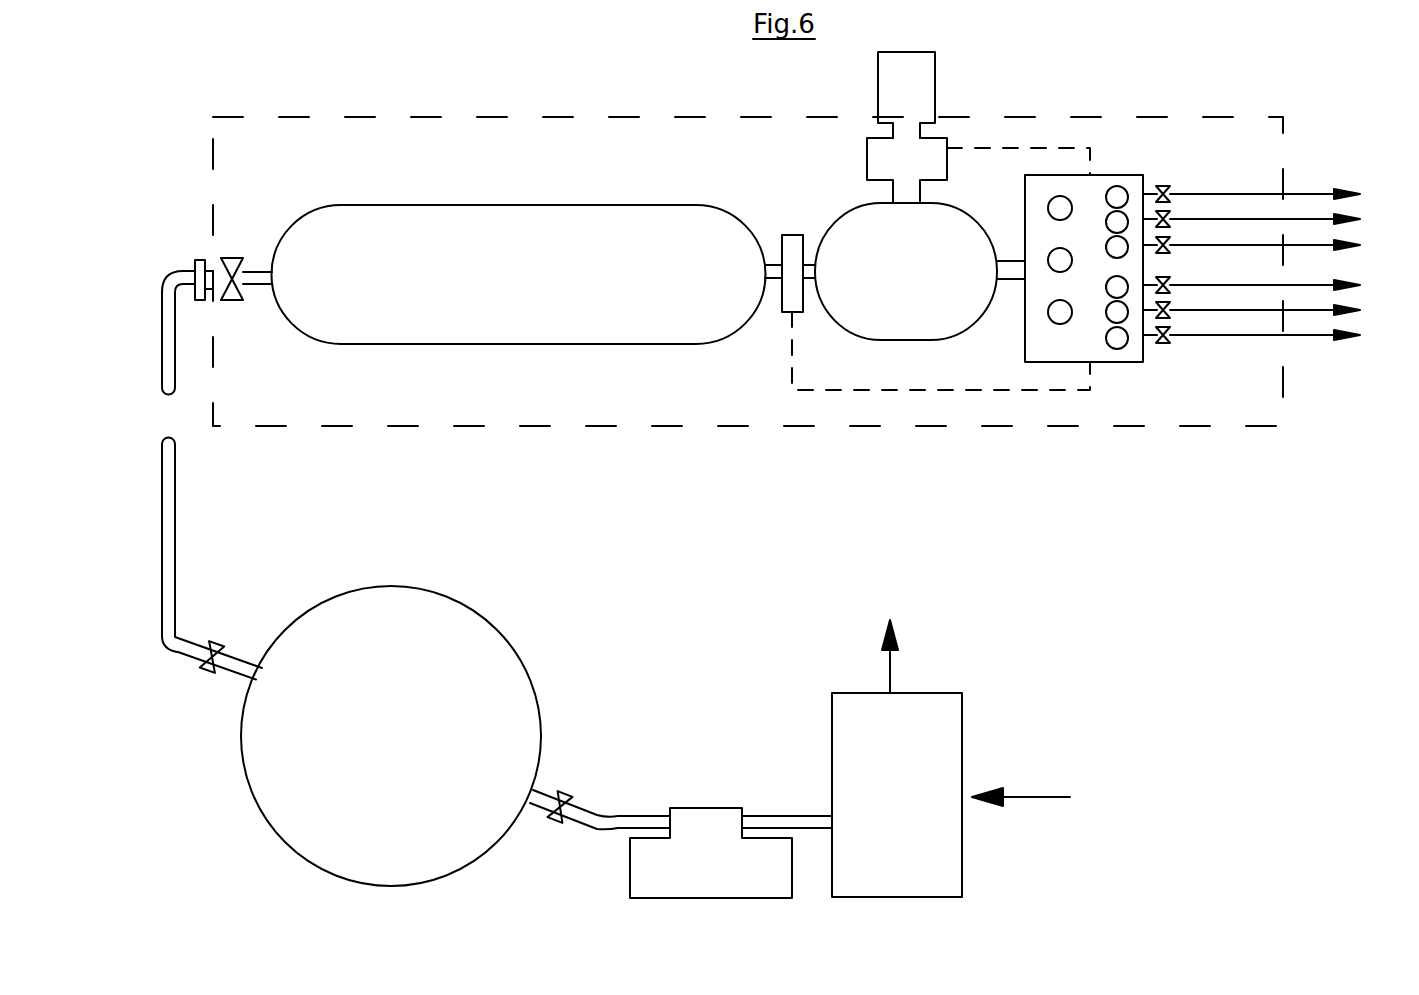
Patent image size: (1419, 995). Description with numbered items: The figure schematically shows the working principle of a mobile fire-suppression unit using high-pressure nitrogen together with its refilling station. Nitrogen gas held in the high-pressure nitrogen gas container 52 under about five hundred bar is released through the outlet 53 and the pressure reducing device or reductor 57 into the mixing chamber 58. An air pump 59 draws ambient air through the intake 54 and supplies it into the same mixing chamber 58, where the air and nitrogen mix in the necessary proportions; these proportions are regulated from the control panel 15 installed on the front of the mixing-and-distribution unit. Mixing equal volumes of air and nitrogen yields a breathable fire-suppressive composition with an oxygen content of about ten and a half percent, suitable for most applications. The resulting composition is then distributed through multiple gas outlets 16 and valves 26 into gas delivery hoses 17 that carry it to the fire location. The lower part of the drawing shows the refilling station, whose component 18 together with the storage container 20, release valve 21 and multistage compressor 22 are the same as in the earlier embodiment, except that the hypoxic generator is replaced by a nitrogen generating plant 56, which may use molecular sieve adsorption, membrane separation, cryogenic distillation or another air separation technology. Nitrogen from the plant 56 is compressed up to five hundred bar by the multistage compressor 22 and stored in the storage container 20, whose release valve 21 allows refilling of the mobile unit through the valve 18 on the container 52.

The control panel 15 is at (1093, 347).
The gas outlets 16 is at (1145, 190).
The gas delivery hoses 17 is at (1305, 243).
The refilling station component 18 is at (234, 253).
The storage container 20 is at (391, 736).
The release valve 21 is at (218, 637).
The multistage compressor 22 is at (681, 844).
The valves 26 is at (1170, 188).
The high-pressure nitrogen gas container 52 is at (527, 274).
The outlet 53 is at (772, 282).
The intake 54 is at (906, 95).
The nitrogen generating plant 56 is at (990, 758).
The pressure reducing device 57 is at (793, 247).
The mixing chamber 58 is at (920, 271).
The air pump 59 is at (907, 170).